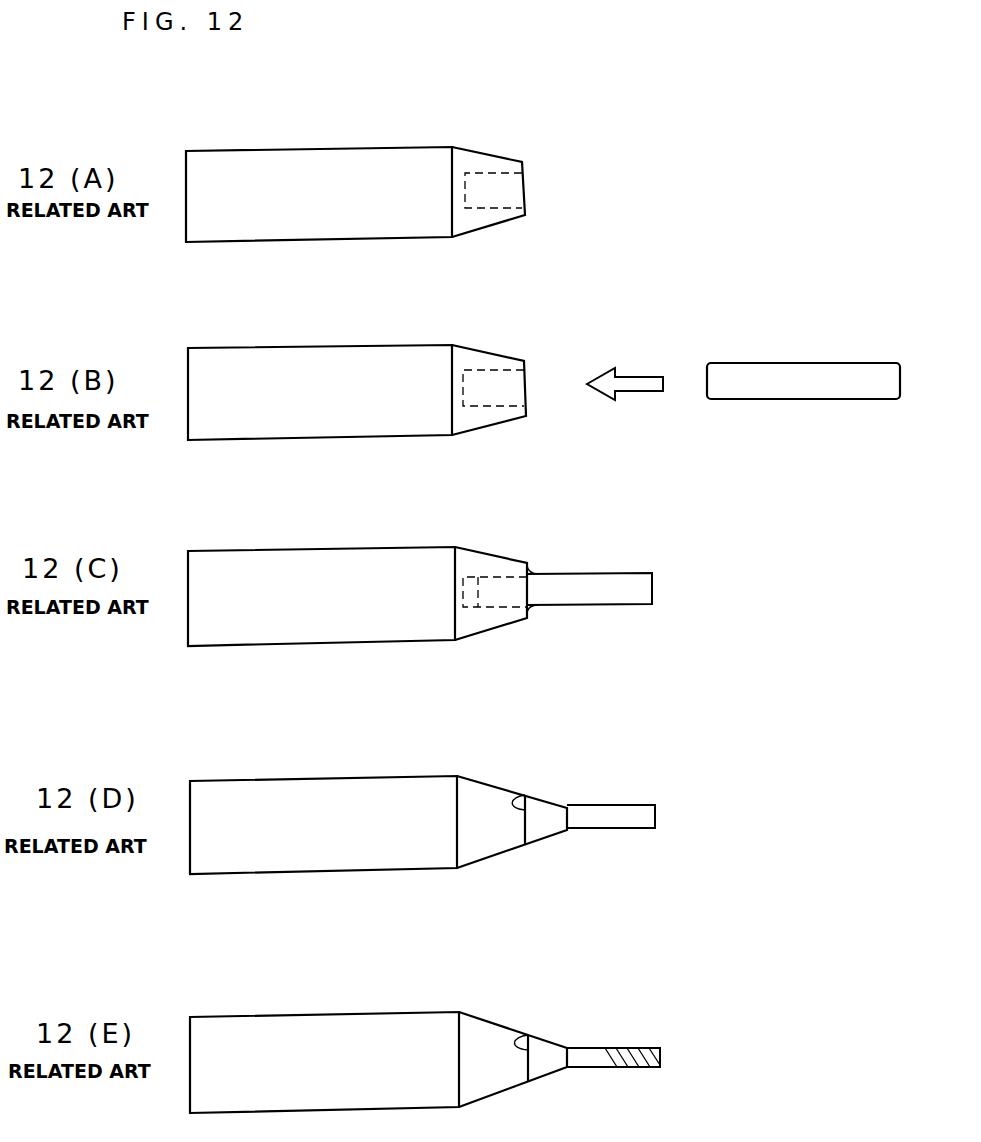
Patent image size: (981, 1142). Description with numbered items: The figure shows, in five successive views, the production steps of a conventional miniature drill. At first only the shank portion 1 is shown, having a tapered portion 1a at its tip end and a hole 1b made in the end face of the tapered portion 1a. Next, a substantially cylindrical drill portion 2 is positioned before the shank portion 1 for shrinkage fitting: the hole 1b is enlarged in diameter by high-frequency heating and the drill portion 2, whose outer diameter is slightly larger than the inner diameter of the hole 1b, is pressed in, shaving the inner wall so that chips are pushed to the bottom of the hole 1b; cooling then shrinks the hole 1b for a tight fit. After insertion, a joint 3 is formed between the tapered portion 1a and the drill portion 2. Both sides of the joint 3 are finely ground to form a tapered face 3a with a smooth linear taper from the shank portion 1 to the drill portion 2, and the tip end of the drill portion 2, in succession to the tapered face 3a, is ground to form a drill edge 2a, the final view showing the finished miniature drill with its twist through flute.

The shank portion 1 is at (322, 148).
The tapered portion 1a is at (485, 152).
The hole 1b is at (510, 180).
The drill portion 2 is at (765, 363).
The drill edge 2a is at (614, 838).
The joint 3 is at (530, 573).
The tapered face 3a is at (479, 778).